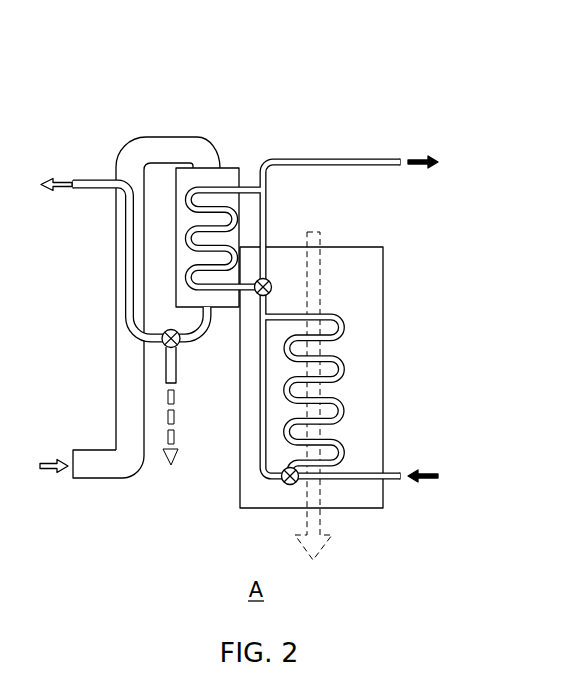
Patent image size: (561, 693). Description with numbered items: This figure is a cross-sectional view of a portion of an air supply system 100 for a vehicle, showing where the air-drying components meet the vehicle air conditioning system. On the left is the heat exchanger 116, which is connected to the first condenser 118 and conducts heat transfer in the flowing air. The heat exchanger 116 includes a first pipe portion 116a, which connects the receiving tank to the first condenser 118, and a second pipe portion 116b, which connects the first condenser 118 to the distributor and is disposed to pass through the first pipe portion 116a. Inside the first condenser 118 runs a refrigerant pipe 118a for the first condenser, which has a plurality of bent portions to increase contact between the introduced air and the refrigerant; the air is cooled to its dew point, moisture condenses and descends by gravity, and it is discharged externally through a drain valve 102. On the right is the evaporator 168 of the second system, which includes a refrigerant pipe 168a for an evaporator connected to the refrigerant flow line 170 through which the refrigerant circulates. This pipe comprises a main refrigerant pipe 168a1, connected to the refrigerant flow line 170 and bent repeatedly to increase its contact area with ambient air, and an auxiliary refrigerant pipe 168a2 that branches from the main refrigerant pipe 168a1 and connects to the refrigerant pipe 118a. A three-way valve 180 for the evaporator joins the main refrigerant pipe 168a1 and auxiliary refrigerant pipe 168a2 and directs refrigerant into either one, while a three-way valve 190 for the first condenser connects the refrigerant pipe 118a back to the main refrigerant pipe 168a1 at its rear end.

The air supply system 100 is at (267, 62).
The drain valve 102 is at (177, 347).
The heat exchanger 116 is at (65, 104).
The first pipe portion 116a is at (137, 142).
The second pipe portion 116b is at (95, 182).
The first condenser 118 is at (232, 167).
The refrigerant pipe for the first condenser 118a is at (208, 187).
The evaporator 168 is at (385, 273).
The refrigerant pipe for an evaporator 168a is at (381, 367).
The main refrigerant pipe 168a1 is at (265, 258).
The auxiliary refrigerant pipe 168a2 is at (265, 367).
The refrigerant flow line 170 is at (265, 217).
The 3-way valve for an evaporator 180 is at (288, 486).
The 3-way valve for the first condenser 190 is at (258, 297).